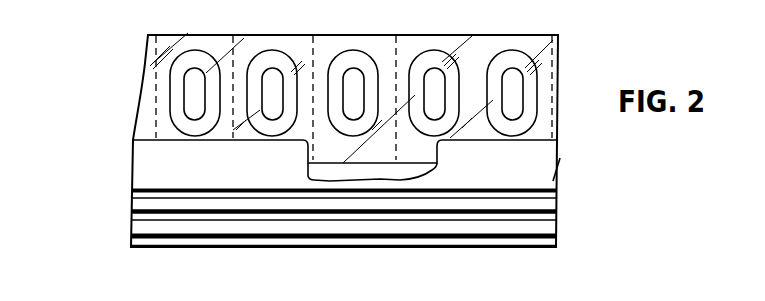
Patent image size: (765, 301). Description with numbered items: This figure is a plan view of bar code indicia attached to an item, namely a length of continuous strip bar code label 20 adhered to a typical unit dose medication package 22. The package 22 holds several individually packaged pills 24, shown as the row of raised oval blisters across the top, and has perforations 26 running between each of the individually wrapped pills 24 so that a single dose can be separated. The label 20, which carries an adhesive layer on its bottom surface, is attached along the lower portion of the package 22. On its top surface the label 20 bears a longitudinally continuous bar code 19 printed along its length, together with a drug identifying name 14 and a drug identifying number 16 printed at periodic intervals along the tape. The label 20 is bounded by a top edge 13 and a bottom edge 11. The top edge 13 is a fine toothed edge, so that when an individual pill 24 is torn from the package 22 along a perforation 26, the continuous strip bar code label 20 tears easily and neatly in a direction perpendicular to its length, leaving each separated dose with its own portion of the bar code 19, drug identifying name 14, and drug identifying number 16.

The unit dose medication package 22 is at (112, 82).
The individually packaged pill 24 is at (363, 52).
The perforation 26 is at (290, 72).
The top edge 13 is at (533, 141).
The drug identifying name 14 is at (553, 151).
The drug identifying number 16 is at (555, 163).
The continuous strip bar code label 20 is at (570, 191).
The longitudinally continuous bar code 19 is at (535, 224).
The bottom edge 11 is at (305, 248).